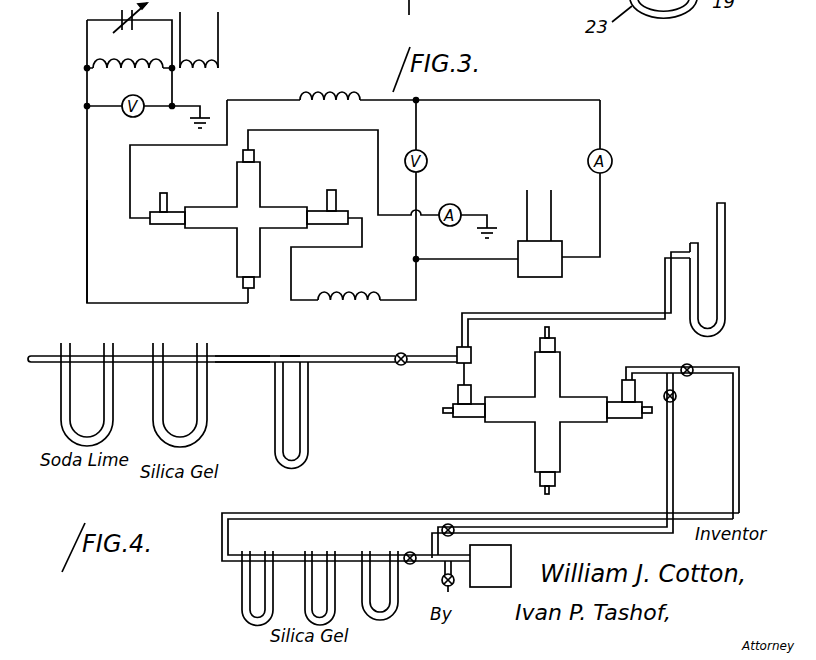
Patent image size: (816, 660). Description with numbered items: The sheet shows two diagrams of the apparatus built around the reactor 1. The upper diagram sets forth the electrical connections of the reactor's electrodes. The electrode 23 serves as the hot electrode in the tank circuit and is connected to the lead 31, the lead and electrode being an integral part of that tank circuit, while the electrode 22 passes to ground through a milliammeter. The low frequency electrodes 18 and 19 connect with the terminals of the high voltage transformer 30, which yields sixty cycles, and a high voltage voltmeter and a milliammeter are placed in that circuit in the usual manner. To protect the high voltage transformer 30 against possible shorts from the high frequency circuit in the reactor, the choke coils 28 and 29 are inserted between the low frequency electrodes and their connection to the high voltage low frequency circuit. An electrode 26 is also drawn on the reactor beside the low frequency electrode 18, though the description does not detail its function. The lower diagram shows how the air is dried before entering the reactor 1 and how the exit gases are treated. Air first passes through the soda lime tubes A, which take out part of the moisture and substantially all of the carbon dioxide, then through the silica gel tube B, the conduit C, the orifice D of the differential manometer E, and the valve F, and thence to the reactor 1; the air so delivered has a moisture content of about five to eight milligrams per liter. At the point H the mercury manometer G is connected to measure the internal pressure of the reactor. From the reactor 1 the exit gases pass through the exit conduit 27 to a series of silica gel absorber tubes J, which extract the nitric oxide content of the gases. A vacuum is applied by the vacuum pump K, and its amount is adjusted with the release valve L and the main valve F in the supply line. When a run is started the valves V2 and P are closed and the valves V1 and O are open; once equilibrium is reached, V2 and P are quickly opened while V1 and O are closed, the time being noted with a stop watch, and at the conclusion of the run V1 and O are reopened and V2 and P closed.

In FIG. 3, the reactor 1 is at (233, 187).
In FIG. 4, the reactor 1 is at (578, 364).
In FIG. 3, the low frequency electrode 18 is at (136, 222).
In FIG. 3, the low frequency electrode 19 is at (355, 218).
In FIG. 3, the electrode 22 is at (252, 152).
In FIG. 3, the electrode 23 is at (244, 292).
In FIG. 3, the electrode 26 is at (170, 186).
In FIG. 3, the exit conduit 27 is at (331, 190).
In FIG. 3, the choke coil 28 is at (339, 96).
In FIG. 3, the choke coil 29 is at (350, 290).
In FIG. 3, the high voltage transformer 30 is at (528, 262).
In FIG. 3, the lead 31 is at (87, 203).
In FIG. 4, the soda lime tubes A is at (61, 396).
In FIG. 4, the silica gel tube B is at (207, 411).
In FIG. 4, the conduit C is at (240, 355).
In FIG. 4, the orifice D is at (290, 355).
In FIG. 4, the differential manometer E is at (305, 398).
In FIG. 4, the valve F is at (403, 366).
In FIG. 4, the point H is at (475, 351).
In FIG. 4, the mercury manometer G is at (728, 271).
In FIG. 4, the valve V2 is at (670, 355).
In FIG. 4, the valve V1 is at (678, 398).
In FIG. 4, the valve O is at (452, 525).
In FIG. 4, the silica gel absorber tubes J is at (360, 545).
In FIG. 4, the valve P is at (406, 553).
In FIG. 4, the release valve L is at (443, 581).
In FIG. 4, the vacuum pump K is at (482, 589).